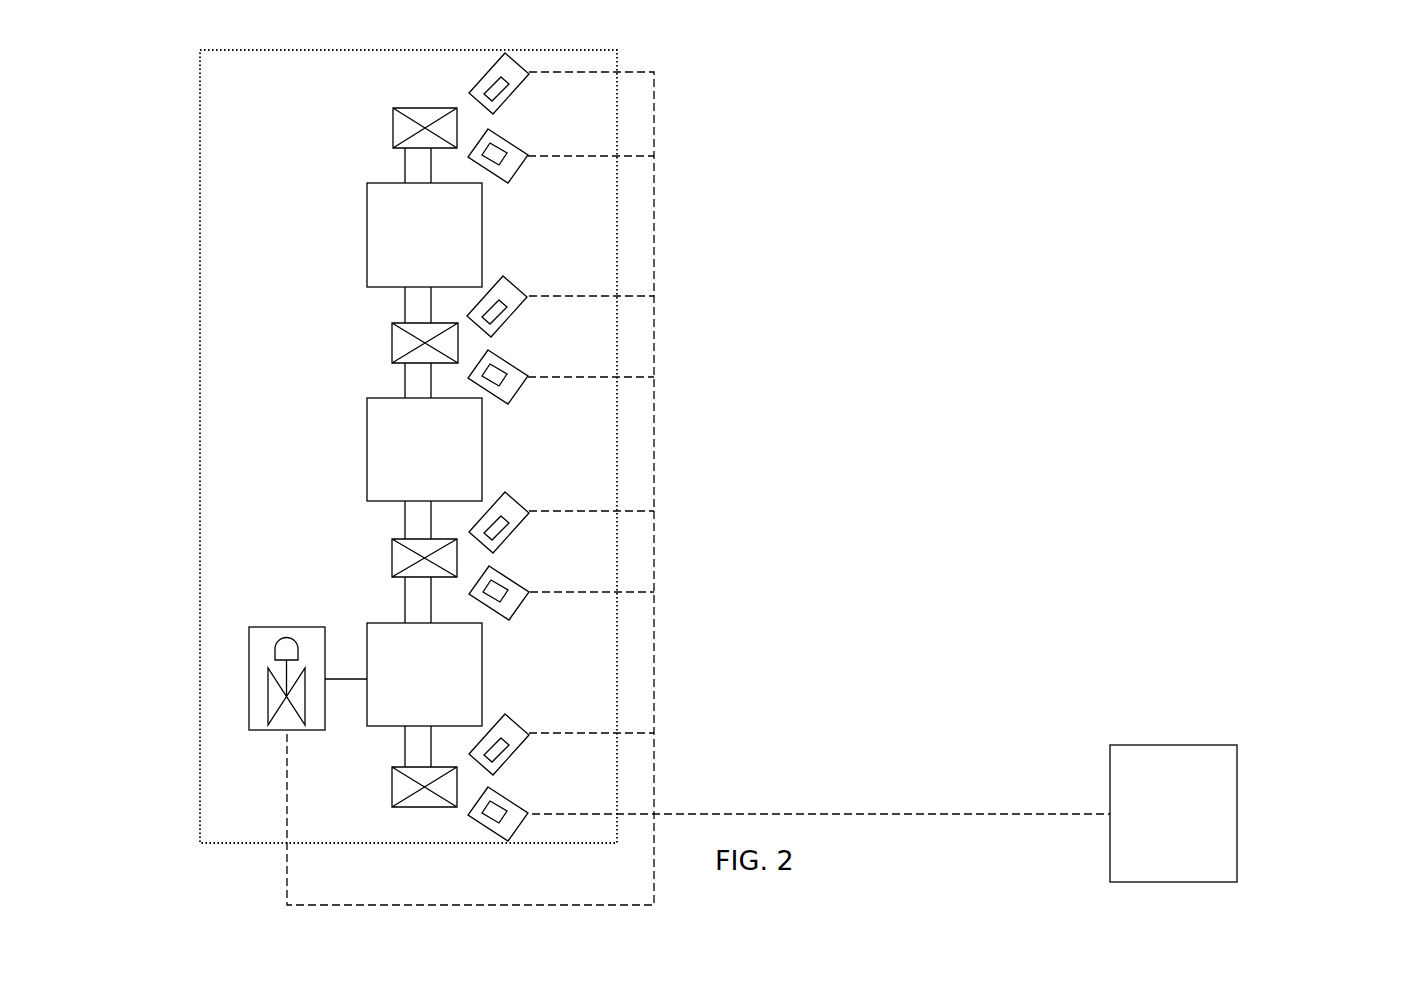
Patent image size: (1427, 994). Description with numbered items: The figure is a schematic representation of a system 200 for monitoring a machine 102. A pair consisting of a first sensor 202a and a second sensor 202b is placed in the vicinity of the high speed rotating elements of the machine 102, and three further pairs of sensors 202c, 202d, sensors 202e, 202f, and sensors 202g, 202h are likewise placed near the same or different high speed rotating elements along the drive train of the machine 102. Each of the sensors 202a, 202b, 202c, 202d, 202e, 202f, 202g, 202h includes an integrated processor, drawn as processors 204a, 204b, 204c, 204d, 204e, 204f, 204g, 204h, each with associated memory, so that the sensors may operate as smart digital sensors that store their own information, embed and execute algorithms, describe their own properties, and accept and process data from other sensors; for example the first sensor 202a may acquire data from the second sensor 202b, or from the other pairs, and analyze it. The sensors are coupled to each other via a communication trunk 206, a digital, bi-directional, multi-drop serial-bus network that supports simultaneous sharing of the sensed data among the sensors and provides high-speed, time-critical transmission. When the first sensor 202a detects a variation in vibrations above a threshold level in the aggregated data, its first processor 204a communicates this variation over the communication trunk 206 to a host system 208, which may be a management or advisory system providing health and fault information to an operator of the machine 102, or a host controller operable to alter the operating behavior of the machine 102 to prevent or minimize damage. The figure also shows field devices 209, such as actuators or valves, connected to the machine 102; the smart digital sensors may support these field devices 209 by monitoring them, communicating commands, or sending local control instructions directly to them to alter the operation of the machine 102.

The system 200 is at (1342, 118).
The machine 102 is at (200, 448).
The first sensor 202a is at (532, 96).
The second sensor 202b is at (536, 174).
The sensor 202c is at (529, 319).
The sensor 202d is at (536, 395).
The sensor 202e is at (532, 535).
The sensor 202f is at (534, 611).
The sensor 202g is at (533, 757).
The sensor 202h is at (453, 814).
The first processor 204a is at (546, 92).
The processor 204b is at (550, 166).
The processor 204c is at (543, 315).
The processor 204d is at (550, 387).
The processor 204e is at (546, 531).
The processor 204f is at (548, 603).
The processor 204g is at (546, 753).
The processor 204h is at (551, 822).
The communication trunk 206 is at (654, 653).
The host system 208 is at (1173, 745).
The field devices 209 is at (268, 627).